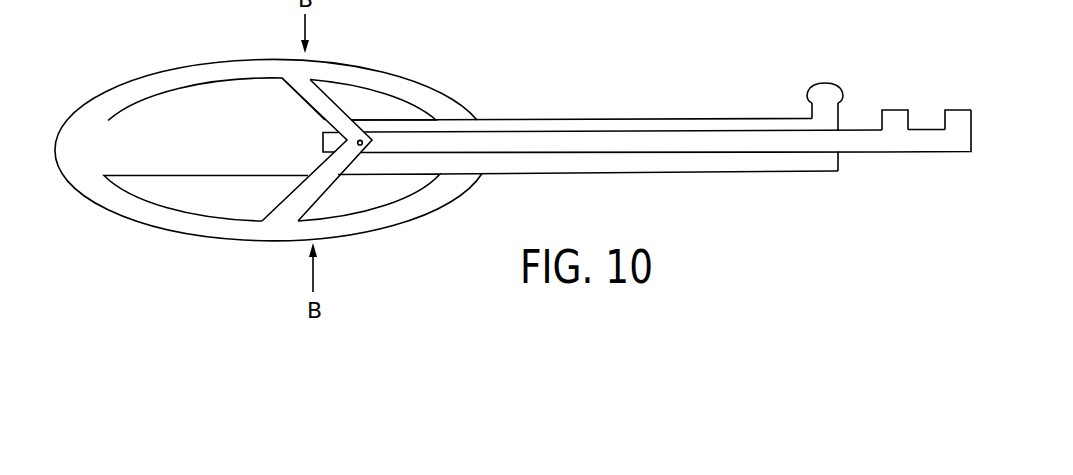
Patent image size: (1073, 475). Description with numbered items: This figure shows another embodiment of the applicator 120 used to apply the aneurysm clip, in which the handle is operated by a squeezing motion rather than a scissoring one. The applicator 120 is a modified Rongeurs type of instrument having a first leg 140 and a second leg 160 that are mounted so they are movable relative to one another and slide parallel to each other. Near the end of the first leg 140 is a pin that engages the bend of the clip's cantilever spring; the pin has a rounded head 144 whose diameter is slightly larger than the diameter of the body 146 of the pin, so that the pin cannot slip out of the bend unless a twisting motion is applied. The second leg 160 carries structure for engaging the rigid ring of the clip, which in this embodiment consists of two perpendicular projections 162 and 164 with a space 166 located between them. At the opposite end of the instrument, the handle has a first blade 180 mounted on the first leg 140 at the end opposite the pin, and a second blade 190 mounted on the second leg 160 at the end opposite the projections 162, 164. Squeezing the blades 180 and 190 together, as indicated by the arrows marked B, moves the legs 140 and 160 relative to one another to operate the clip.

The applicator 120 is at (604, 100).
The first leg 140 is at (675, 141).
The rounded head 144 is at (827, 92).
The body 146 is at (815, 110).
The second leg 160 is at (945, 132).
The projection 162 is at (960, 117).
The projection 164 is at (893, 112).
The space 166 is at (925, 128).
The first blade 180 is at (260, 66).
The second blade 190 is at (173, 222).